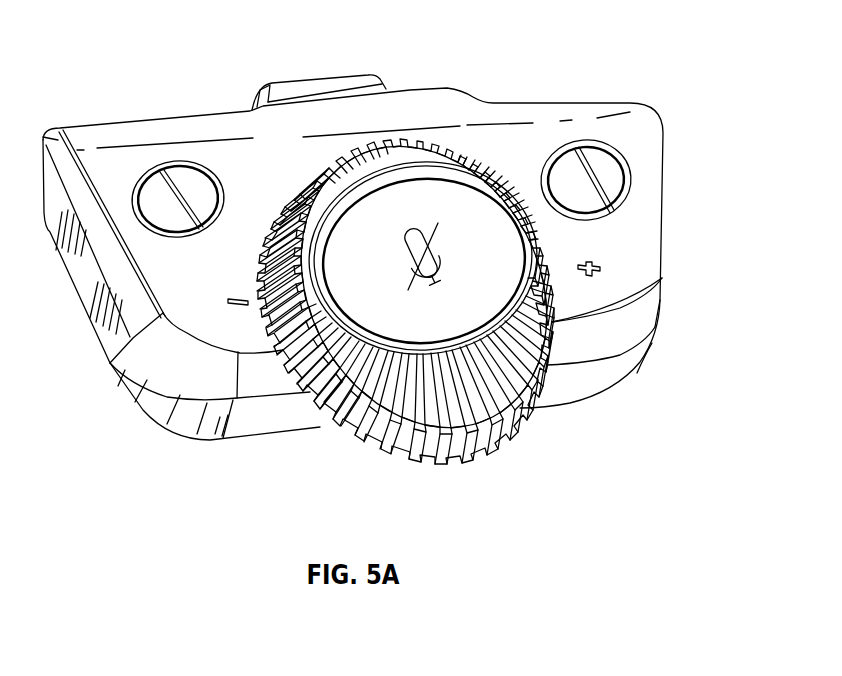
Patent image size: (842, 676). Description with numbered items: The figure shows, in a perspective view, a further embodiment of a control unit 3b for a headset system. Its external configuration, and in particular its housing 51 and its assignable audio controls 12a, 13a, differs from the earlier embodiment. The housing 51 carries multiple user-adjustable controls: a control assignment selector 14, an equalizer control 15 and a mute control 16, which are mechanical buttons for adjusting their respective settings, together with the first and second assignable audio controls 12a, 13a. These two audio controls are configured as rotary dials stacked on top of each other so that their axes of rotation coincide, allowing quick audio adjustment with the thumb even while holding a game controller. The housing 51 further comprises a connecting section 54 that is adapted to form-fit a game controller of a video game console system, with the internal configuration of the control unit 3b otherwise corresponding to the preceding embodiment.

The control unit 3b is at (633, 24).
The housing 51 is at (618, 325).
The connecting section 54 is at (316, 70).
The control assignment selector 14 is at (167, 158).
The equalizer control 15 is at (580, 140).
The mute control 16 is at (440, 210).
The first assignable audio control 12a is at (533, 397).
The second assignable audio control 13a is at (408, 462).